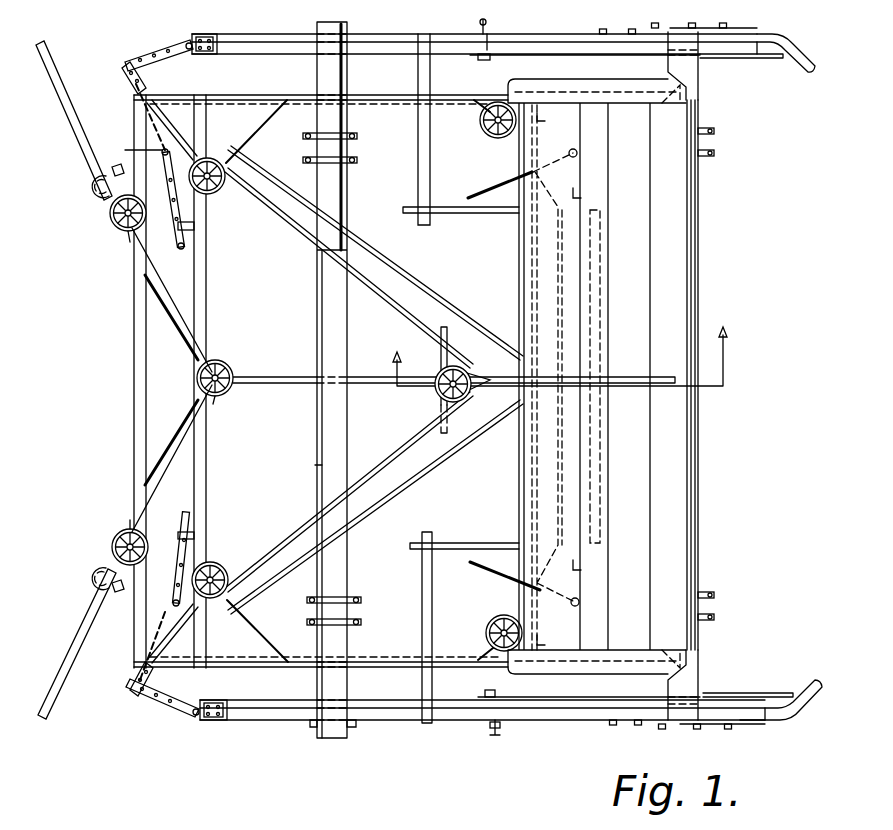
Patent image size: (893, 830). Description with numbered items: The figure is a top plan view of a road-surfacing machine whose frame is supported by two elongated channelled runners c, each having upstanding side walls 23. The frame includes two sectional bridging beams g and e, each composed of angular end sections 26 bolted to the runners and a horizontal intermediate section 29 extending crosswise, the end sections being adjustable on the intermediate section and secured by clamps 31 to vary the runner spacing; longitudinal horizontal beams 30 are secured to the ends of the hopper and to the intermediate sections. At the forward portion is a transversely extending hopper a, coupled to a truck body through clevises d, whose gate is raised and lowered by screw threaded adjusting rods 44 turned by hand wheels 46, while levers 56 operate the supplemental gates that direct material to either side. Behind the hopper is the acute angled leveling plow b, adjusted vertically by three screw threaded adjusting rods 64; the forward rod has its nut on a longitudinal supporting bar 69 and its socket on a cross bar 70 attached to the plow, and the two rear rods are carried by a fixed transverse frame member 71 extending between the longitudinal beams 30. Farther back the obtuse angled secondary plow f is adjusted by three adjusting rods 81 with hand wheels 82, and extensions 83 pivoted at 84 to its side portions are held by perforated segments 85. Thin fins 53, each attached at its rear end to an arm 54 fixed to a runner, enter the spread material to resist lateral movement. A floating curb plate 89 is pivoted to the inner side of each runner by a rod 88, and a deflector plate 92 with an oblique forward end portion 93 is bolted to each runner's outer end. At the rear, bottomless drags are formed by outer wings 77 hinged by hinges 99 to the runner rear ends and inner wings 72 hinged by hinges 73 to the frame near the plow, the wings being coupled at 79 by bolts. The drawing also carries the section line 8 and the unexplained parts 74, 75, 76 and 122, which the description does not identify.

The section line 8- 8 is at (559, 344).
The side wall 23 is at (470, 722).
The angular end section 26 is at (317, 68).
The intermediate section 29 is at (322, 314).
The longitudinal horizontal beam 30 is at (378, 100).
The clamp 31 is at (358, 160).
The screw threaded adjusting rod 44 is at (490, 136).
The hand wheel 46 is at (480, 120).
The fin 53 is at (482, 214).
The arm 54 is at (418, 168).
The lever 56 is at (480, 192).
The screw threaded adjusting rod 64 is at (226, 172).
The supporting bar 69 is at (300, 385).
The cross bar 70 is at (449, 332).
The transverse frame member 71 is at (206, 308).
The inner wing 72 is at (136, 86).
The hinge 73 is at (200, 148).
The link bar 74 is at (173, 213).
The pivot 75 is at (133, 140).
The plate 76 is at (196, 229).
The outer wing 77 is at (172, 56).
The coupling 79 is at (123, 68).
The screw threaded adjusting rod 81 is at (126, 236).
The hand wheel 82 is at (110, 222).
The extension 83 is at (72, 115).
The pivot 84 is at (121, 170).
The segment 85 is at (88, 192).
The rod 88 is at (480, 57).
The floating curb plate 89 is at (770, 60).
The deflector plate 92 is at (765, 722).
The oblique forward end portion 93 is at (808, 70).
The hinge 99 is at (192, 38).
The bar 122 is at (450, 703).
The hopper a is at (660, 480).
The leveling plow b is at (398, 292).
The runner c is at (480, 30).
The clevis d is at (674, 105).
The bridging beam e is at (698, 250).
The secondary plow f is at (166, 312).
The bridging beam g is at (315, 465).